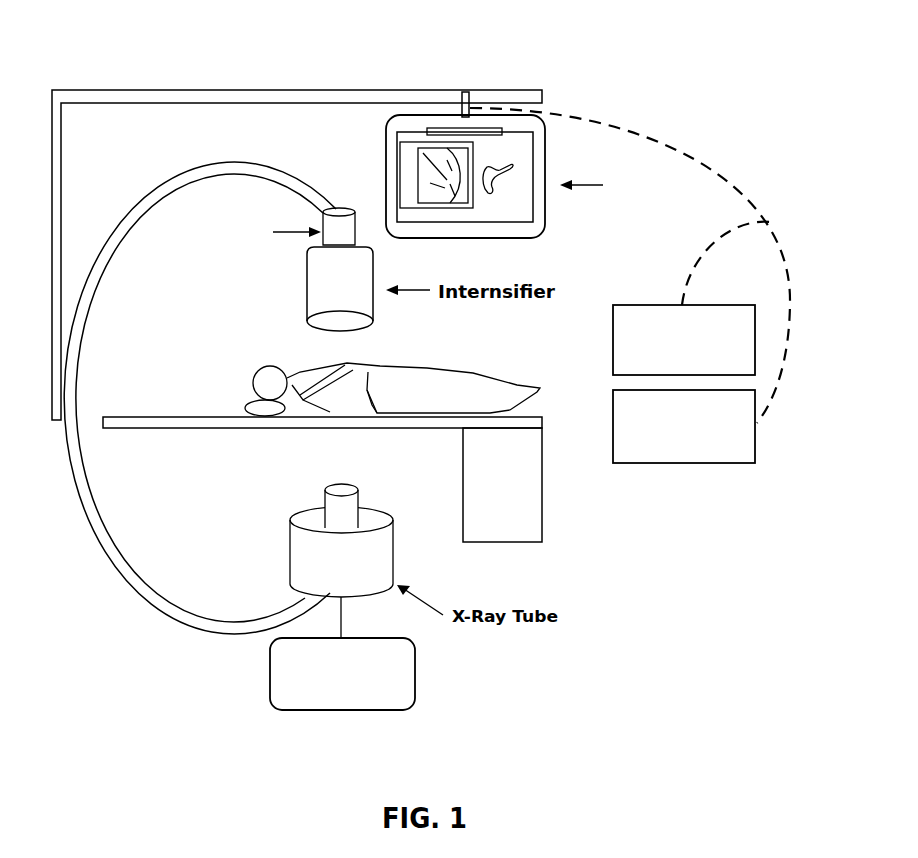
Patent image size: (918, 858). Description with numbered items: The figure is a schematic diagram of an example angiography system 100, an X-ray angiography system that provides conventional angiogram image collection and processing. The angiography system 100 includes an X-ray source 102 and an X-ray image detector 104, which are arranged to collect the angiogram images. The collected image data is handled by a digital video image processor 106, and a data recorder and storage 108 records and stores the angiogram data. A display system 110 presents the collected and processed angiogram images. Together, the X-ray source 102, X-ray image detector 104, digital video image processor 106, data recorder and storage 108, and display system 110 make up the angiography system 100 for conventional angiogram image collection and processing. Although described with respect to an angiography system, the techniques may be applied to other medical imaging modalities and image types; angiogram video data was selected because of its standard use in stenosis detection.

The angiography system 100 is at (557, 20).
The X-ray source 102 is at (262, 708).
The X-ray image detector 104 is at (344, 182).
The digital video image processor 106 is at (715, 463).
The data recorder and storage 108 is at (755, 345).
The display system 110 is at (697, 185).